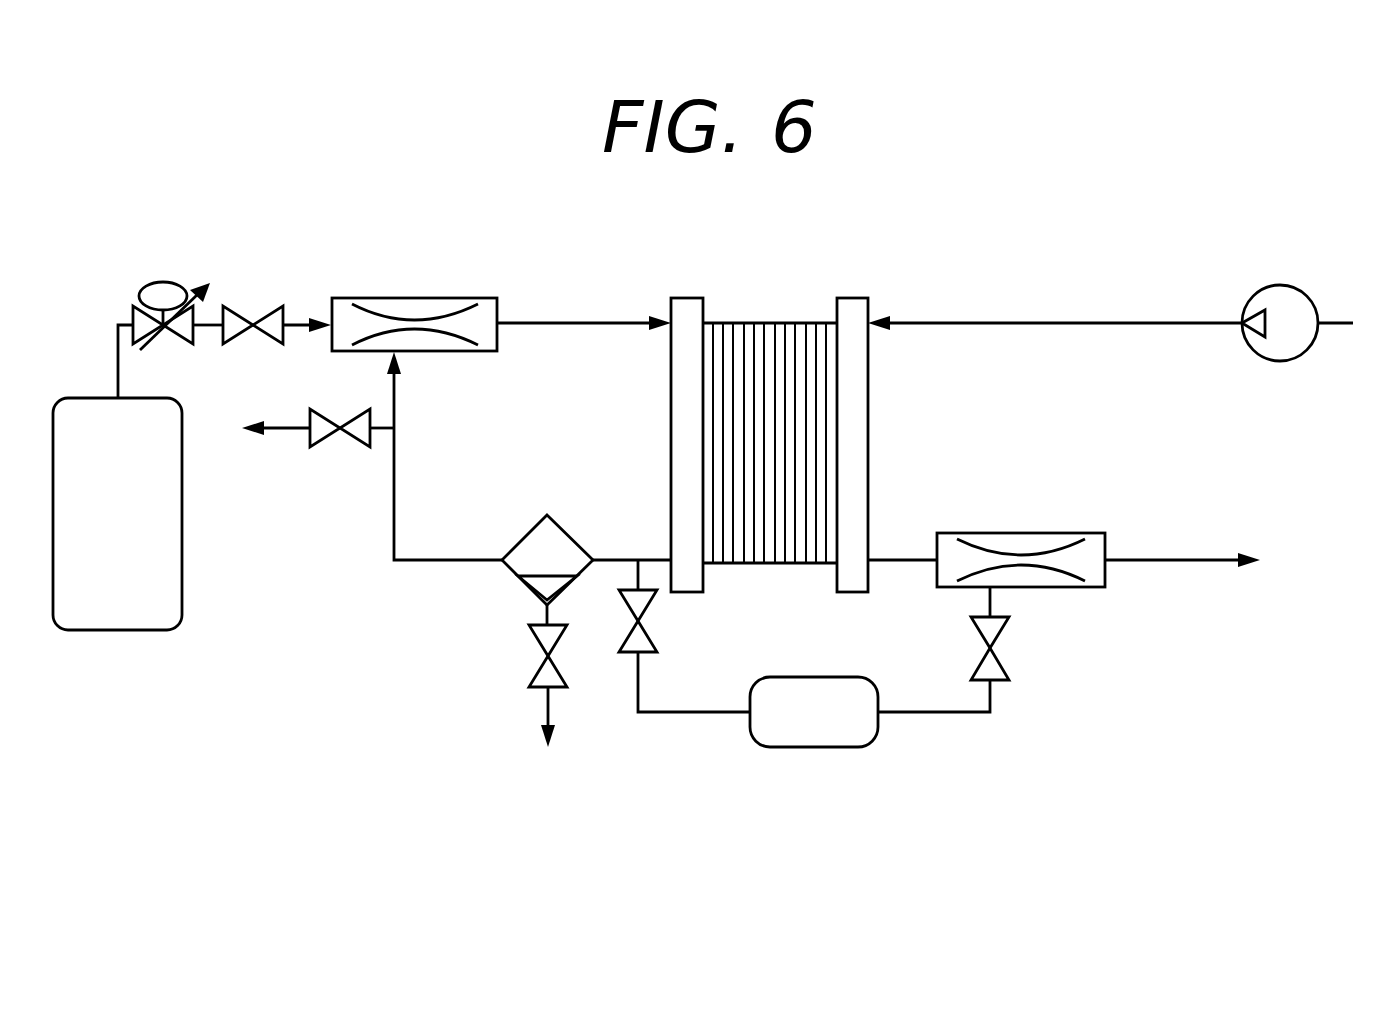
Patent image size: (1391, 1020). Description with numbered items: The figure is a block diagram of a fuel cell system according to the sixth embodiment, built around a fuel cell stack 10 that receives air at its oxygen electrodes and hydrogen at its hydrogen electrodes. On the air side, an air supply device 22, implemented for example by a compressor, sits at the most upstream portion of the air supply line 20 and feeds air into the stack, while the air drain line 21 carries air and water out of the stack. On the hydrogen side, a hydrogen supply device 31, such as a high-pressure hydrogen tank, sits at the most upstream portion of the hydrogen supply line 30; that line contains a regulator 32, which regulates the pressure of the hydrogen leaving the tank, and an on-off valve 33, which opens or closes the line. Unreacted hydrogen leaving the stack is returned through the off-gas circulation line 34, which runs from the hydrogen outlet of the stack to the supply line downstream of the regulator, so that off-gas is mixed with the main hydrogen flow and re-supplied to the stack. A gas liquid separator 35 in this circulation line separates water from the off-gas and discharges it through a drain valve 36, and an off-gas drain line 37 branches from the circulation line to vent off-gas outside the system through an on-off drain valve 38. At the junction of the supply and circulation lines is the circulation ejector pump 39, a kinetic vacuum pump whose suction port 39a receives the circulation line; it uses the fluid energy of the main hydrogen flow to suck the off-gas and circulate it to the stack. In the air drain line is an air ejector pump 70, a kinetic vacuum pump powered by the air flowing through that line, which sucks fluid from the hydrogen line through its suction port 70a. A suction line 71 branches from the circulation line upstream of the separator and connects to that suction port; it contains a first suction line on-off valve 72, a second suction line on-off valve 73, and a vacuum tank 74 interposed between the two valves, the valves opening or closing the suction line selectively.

The fuel cell stack 10 is at (752, 565).
The air supply line 20 is at (907, 325).
The air drain line 21 is at (1188, 563).
The air supply device 22 is at (1283, 362).
The hydrogen supply line 30 is at (117, 368).
The hydrogen supply device 31 is at (127, 633).
The regulator 32 is at (158, 280).
The on-off valve 33 is at (255, 318).
The off-gas circulation line 34 is at (396, 495).
The gas liquid separator 35 is at (560, 522).
The drain valve 36 is at (538, 655).
The off-gas drain line 37 is at (283, 428).
The on-off drain valve 38 is at (337, 448).
The circulation ejector pump 39 is at (430, 298).
The suction port 39a is at (396, 353).
The air ejector pump 70 is at (1022, 532).
The suction port 70a is at (992, 590).
The suction line 71 is at (935, 714).
The suction line on-off valve 72 is at (645, 625).
The second suction line on-off valve 73 is at (1000, 650).
The vacuum tank 74 is at (808, 750).